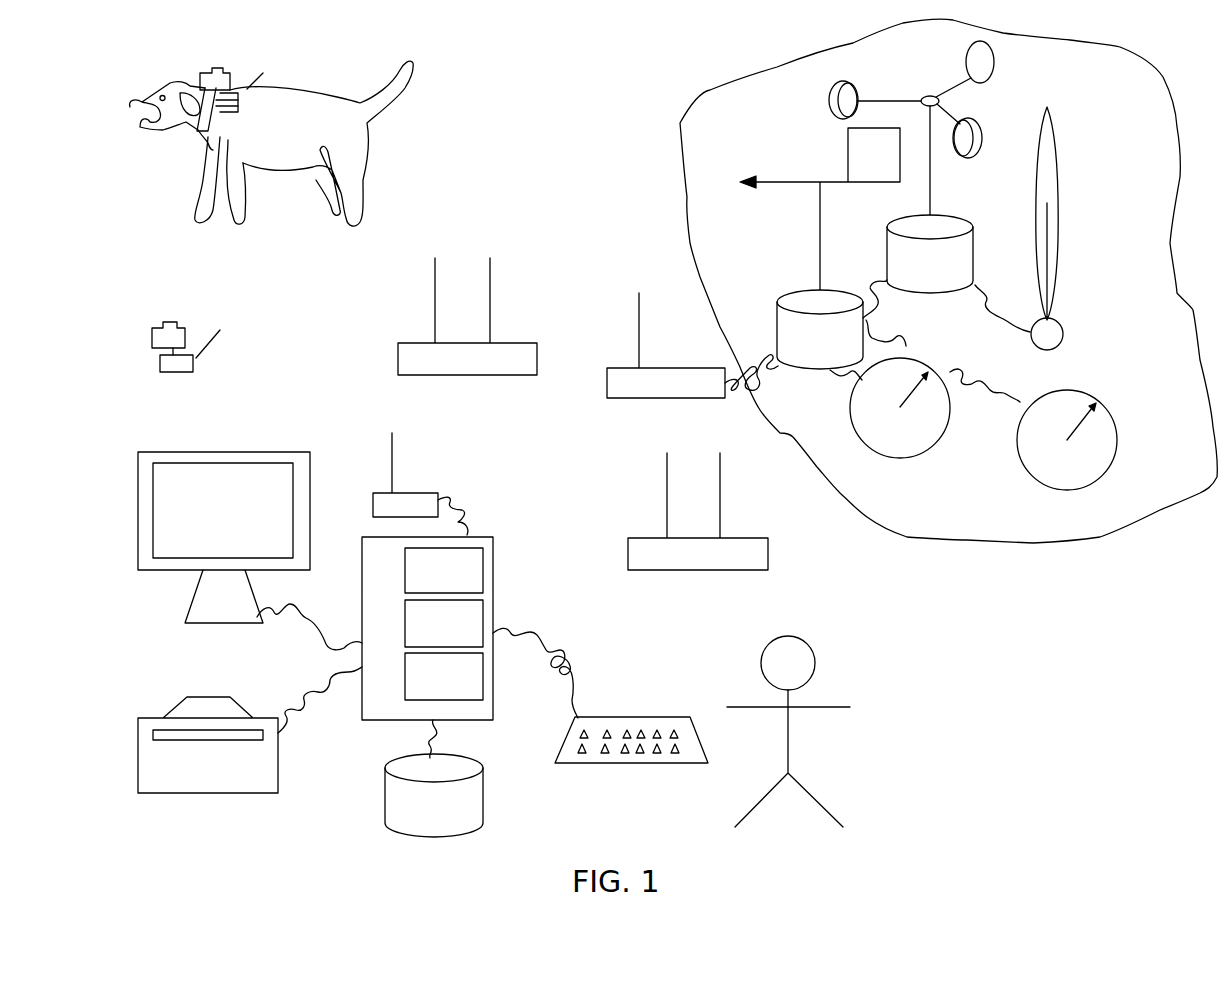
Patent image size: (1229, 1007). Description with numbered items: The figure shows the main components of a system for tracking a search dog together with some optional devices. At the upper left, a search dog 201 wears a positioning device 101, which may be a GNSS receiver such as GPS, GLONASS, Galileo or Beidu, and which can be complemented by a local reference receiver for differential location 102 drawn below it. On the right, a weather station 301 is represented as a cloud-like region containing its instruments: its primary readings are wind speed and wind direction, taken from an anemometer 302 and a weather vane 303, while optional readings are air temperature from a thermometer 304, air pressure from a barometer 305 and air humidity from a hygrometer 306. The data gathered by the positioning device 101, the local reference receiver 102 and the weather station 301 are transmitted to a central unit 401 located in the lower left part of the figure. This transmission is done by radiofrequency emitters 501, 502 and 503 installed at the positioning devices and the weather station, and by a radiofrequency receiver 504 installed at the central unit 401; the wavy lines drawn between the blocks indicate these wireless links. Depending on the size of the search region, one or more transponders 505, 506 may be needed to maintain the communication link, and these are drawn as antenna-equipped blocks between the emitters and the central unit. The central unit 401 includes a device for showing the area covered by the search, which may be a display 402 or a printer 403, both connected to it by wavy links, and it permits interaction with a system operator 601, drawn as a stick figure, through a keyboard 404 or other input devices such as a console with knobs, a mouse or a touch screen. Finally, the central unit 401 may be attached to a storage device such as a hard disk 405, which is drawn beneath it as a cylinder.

The positioning device 101 is at (226, 80).
The local reference receiver for differential location 102 is at (172, 328).
The search dog 201 is at (340, 120).
The weather station 301 is at (1027, 543).
The anemometer 302 is at (928, 96).
The weather vane 303 is at (777, 180).
The thermometer 304 is at (1063, 192).
The barometer 305 is at (1080, 487).
The hygrometer 306 is at (913, 457).
The central unit 401 is at (493, 600).
The display 402 is at (200, 450).
The printer 403 is at (242, 783).
The keyboard 404 is at (633, 717).
The hard disk 405 is at (470, 803).
The radiofrequency emitter 501 is at (240, 107).
The radiofrequency emitter 502 is at (620, 380).
The radiofrequency emitter 503 is at (187, 365).
The radiofrequency receiver 504 is at (387, 503).
The transponder 505 is at (407, 352).
The transponder 506 is at (640, 547).
The system operator 601 is at (833, 707).